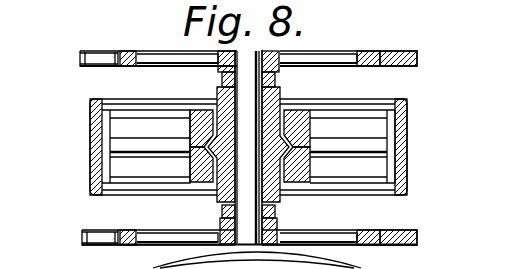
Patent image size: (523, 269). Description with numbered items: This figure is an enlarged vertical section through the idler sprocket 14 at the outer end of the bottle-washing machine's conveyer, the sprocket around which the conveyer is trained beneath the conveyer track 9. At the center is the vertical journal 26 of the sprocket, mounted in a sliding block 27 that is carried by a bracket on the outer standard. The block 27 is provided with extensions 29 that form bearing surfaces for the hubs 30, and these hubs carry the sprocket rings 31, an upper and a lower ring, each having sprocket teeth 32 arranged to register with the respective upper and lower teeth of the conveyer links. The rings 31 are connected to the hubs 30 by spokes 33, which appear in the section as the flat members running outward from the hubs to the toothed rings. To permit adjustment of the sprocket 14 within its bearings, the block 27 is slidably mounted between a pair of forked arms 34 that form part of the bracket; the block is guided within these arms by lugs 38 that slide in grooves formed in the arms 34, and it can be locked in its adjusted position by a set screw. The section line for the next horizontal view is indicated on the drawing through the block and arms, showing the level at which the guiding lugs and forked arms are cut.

The conveyer track 9 is at (90, 162).
The idler sprocket 14 is at (410, 43).
The journal 26 is at (277, 206).
The sliding block 27 is at (281, 97).
The extensions 29 is at (222, 198).
The hubs 30 is at (222, 78).
The sprocket rings 31 is at (360, 51).
The sprocket teeth 32 is at (88, 63).
The spokes 33 is at (167, 63).
The forked arms 34 is at (192, 163).
The lugs 38 is at (183, 133).